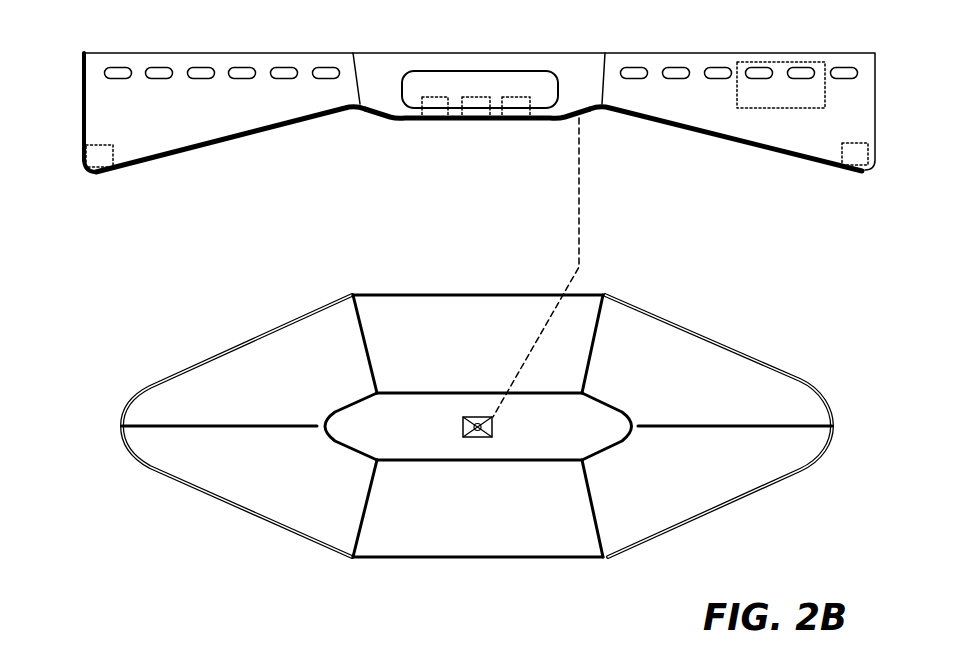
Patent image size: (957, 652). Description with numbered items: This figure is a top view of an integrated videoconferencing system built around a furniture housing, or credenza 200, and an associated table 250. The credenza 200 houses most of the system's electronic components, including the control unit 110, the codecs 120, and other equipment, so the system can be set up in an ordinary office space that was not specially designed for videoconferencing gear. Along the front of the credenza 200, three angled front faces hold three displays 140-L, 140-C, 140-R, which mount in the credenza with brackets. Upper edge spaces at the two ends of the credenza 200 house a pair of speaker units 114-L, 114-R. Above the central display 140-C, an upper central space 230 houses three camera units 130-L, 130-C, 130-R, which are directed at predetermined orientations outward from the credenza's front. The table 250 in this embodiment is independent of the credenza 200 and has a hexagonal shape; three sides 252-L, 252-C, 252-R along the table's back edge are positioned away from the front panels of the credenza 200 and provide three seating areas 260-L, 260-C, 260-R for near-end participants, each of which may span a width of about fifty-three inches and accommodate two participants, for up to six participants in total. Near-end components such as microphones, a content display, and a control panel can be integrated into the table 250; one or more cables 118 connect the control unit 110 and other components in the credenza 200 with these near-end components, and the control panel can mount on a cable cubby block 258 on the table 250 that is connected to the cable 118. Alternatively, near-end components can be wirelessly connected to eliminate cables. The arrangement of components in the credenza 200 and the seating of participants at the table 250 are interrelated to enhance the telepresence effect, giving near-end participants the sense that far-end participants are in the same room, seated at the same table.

The credenza 200 is at (82, 82).
The control unit 110 is at (773, 62).
The codecs 120 is at (780, 73).
The speaker unit 114-L is at (97, 174).
The speaker unit 114-R is at (858, 171).
The cable 118 is at (580, 244).
The camera unit 130-L is at (432, 120).
The camera unit 130-C is at (475, 120).
The camera unit 130-R is at (518, 120).
The display 140-L is at (168, 161).
The display 140-C is at (397, 120).
The display 140-R is at (707, 140).
The upper central space 230 is at (445, 71).
The table 250 is at (457, 453).
The side 252-L is at (210, 500).
The side 252-C is at (397, 559).
The side 252-R is at (787, 477).
The cable cubby block 258 is at (465, 417).
The seating area 260-L is at (237, 440).
The seating area 260-C is at (475, 453).
The seating area 260-R is at (733, 427).